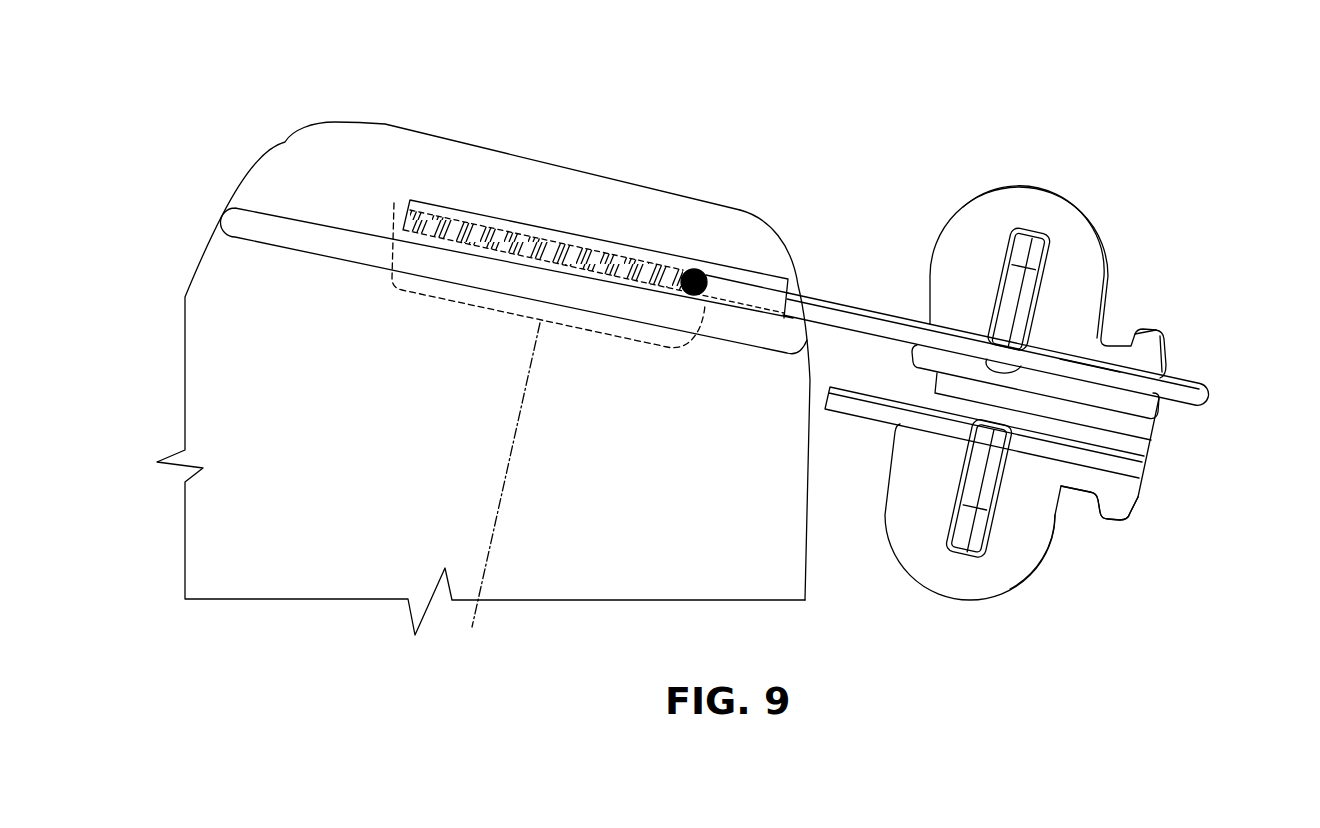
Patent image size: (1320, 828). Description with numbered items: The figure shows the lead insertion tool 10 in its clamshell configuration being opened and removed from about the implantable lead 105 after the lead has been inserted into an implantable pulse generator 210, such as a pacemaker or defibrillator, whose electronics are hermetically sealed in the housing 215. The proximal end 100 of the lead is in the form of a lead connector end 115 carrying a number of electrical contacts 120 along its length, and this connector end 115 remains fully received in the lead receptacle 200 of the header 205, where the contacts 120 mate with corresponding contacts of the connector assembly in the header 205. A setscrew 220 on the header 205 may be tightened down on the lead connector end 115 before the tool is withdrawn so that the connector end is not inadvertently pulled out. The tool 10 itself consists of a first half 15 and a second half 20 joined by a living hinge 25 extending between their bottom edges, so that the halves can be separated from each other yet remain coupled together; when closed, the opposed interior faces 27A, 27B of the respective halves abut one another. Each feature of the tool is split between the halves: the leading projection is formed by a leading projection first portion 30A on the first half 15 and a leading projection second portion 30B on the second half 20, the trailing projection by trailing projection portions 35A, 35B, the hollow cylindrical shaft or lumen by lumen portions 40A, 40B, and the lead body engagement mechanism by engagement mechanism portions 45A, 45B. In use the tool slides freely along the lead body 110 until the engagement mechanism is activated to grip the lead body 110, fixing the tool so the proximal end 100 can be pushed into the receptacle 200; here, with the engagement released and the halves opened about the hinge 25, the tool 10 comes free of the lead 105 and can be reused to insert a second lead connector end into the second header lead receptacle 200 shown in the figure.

The lead insertion tool 10 is at (1068, 390).
The first half 15 is at (1068, 548).
The second half 20 is at (1078, 243).
The living hinge 25 is at (1140, 433).
The interior face of first half 27A is at (1013, 572).
The interior face of second half 27B is at (1088, 262).
The leading projection first portion 30A is at (852, 423).
The leading projection second portion 30B is at (876, 300).
The trailing projection first portion 35A is at (1111, 538).
The trailing projection second portion 35B is at (1188, 327).
The lumen first portion 40A is at (1147, 477).
The lumen second portion 40B is at (1150, 403).
The lead body engagement mechanism first portion 45A is at (977, 508).
The lead body engagement mechanism second portion 45B is at (1017, 273).
The proximal end of lead 100 is at (562, 218).
The implantable lead 105 is at (832, 281).
The lead body 110 is at (1073, 367).
The lead connector end 115 is at (498, 492).
The electrical contacts 120 is at (522, 215).
The lead receptacle 200 is at (799, 292).
The header 205 is at (297, 138).
The implantable pulse generator 210 is at (460, 107).
The housing 215 is at (206, 260).
The setscrew 220 is at (697, 270).